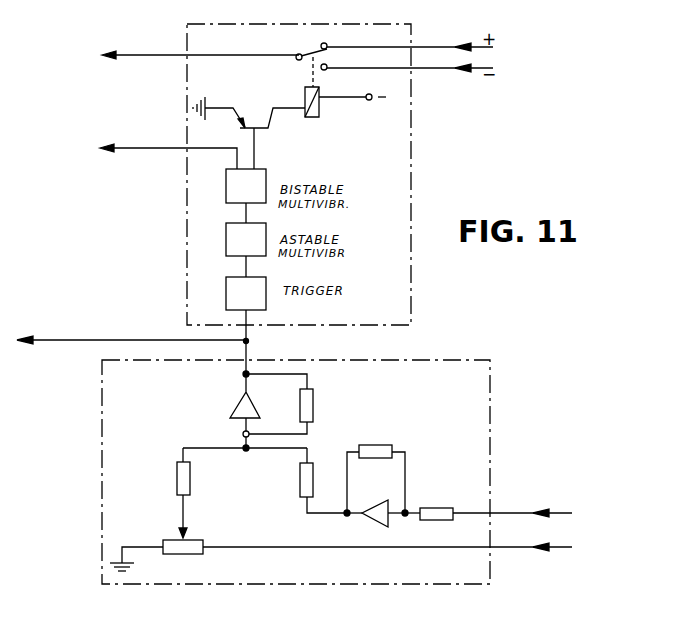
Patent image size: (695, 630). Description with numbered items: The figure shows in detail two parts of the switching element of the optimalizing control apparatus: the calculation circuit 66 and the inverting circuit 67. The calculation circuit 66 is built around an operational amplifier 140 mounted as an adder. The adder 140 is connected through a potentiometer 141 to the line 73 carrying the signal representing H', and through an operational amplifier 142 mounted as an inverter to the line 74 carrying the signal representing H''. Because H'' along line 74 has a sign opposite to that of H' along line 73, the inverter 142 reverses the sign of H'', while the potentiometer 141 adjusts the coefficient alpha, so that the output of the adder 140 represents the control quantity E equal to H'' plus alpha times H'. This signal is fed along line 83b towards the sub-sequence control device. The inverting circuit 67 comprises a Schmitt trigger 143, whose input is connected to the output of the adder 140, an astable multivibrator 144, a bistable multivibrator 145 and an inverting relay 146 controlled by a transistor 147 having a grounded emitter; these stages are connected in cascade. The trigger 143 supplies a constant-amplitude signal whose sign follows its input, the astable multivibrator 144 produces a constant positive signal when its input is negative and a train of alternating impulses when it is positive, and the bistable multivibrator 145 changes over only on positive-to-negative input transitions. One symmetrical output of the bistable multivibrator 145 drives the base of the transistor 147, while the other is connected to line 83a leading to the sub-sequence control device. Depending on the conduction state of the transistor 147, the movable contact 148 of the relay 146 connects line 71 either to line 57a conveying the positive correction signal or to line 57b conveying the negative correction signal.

The line 71 is at (155, 50).
The line 57a is at (430, 45).
The line 57b is at (432, 70).
The movable contact 148 is at (296, 55).
The inverting relay 146 is at (311, 72).
The transistor 147 is at (268, 130).
The inverting circuit 67 is at (411, 165).
The line 83a is at (141, 151).
The bistable multivibrator 145 is at (278, 186).
The astable multivibrator 144 is at (278, 238).
The Schmitt trigger 143 is at (278, 288).
The line 83b is at (78, 340).
The operational amplifier 140 is at (233, 407).
The calculation circuit 66 is at (490, 415).
The potentiometer 141 is at (183, 554).
The operational amplifier 142 is at (388, 521).
The line 74 is at (516, 511).
The line 73 is at (552, 551).